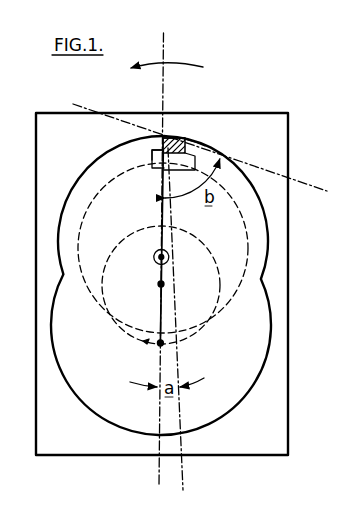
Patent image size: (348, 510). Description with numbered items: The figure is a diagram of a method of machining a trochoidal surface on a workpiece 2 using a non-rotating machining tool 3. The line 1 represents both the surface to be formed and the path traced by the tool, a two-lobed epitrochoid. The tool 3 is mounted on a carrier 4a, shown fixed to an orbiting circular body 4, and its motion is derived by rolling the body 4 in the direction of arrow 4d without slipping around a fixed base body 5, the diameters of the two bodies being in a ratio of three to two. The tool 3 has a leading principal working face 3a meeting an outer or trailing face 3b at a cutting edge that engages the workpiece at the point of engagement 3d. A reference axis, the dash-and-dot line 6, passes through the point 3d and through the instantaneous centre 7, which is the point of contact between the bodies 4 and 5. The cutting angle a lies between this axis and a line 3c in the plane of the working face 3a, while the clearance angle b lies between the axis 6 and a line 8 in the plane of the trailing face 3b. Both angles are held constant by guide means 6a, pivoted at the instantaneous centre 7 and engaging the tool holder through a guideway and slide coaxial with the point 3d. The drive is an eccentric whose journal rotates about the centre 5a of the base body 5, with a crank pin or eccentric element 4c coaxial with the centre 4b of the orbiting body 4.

The line 1 is at (268, 337).
The workpiece 2 is at (273, 393).
The non-rotating machining tool 3 is at (181, 137).
The leading principal working face 3a is at (159, 134).
The outer or trailing face 3b is at (173, 135).
The line coincident with the plane of the working face 3c is at (183, 440).
The point of engagement 3d is at (164, 134).
The orbiting circular body 4 is at (143, 228).
The carrier 4a is at (197, 147).
The centre of the orbiting body 4b is at (153, 257).
The crank pin or eccentric element 4c is at (155, 251).
The arrow 4d is at (210, 63).
The fixed base body 5 is at (213, 267).
The centre of the base body 5a is at (158, 285).
The reference axis 6 is at (158, 405).
The guide means 6a is at (162, 210).
The instantaneous centre 7 is at (158, 344).
The line in the plane of the trailing face 8 is at (308, 158).